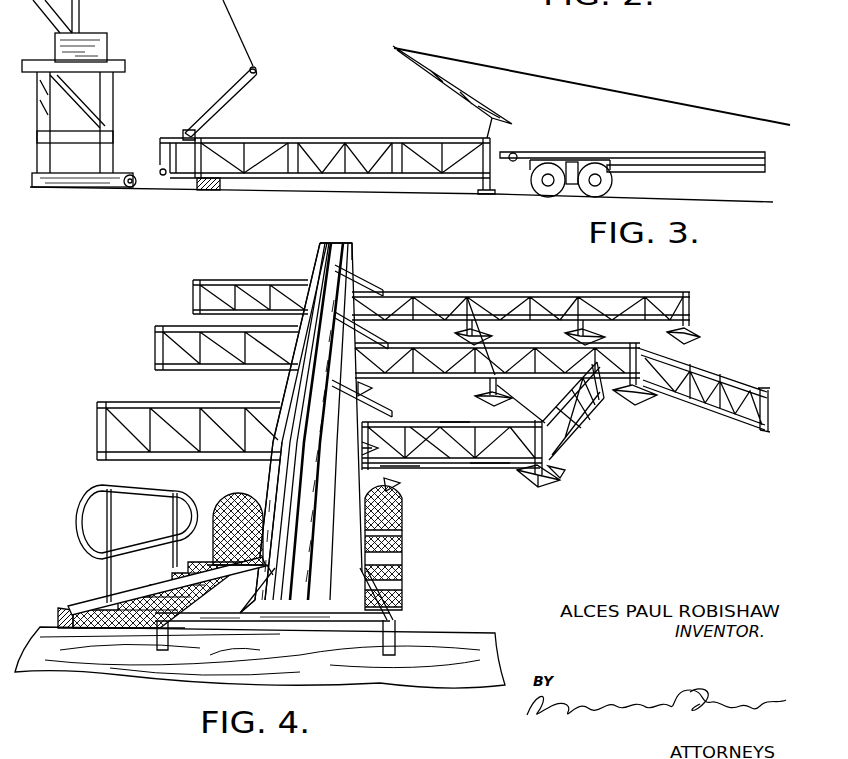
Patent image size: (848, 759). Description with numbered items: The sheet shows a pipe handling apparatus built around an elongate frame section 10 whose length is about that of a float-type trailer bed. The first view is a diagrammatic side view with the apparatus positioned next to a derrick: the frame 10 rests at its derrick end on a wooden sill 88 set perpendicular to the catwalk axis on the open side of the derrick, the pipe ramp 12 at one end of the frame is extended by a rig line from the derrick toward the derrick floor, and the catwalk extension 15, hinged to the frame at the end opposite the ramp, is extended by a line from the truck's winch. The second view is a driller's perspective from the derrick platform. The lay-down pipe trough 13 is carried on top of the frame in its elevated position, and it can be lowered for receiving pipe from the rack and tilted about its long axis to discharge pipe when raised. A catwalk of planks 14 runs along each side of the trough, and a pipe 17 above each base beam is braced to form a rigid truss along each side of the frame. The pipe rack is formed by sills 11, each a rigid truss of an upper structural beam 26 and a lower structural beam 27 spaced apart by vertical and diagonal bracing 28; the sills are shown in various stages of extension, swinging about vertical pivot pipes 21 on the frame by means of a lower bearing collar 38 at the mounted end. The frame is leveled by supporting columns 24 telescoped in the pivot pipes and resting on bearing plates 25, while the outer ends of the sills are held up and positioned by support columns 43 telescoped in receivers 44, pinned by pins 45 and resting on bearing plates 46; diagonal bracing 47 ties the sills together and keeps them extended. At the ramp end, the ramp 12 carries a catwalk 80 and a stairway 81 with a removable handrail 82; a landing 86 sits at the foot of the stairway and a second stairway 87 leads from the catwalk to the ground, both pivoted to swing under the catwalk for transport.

In FIG. 3, the elongate frame section 10 is at (333, 136).
In FIG. 4, the elongate frame section 10 is at (283, 385).
In FIG. 4, the sills 11 is at (247, 280).
In FIG. 3, the pipe ramp 12 is at (222, 86).
In FIG. 4, the pipe ramp 12 is at (88, 596).
In FIG. 4, the lay-down pipe trough 13 is at (303, 456).
In FIG. 4, the catwalk planks 14 is at (314, 421).
In FIG. 3, the catwalk extension 15 is at (433, 95).
In FIG. 4, the catwalk extension 15 is at (352, 250).
In FIG. 4, the pipe 17 is at (283, 488).
In FIG. 4, the pivot pipes 21 is at (380, 449).
In FIG. 4, the supporting columns 24 is at (402, 467).
In FIG. 4, the bearing plates 25 is at (373, 389).
In FIG. 4, the upper structural beam 26 is at (468, 424).
In FIG. 4, the lower structural beam 27 is at (488, 466).
In FIG. 4, the vertical and diagonal bracing 28 is at (430, 443).
In FIG. 4, the lower bearing collar 38 is at (380, 468).
In FIG. 4, the support columns 43 is at (539, 488).
In FIG. 4, the receivers 44 is at (691, 312).
In FIG. 4, the pins 45 is at (492, 374).
In FIG. 4, the bearing plates 46 is at (562, 471).
In FIG. 4, the diagonal bracing 47 is at (490, 335).
In FIG. 4, the catwalk 80 is at (275, 621).
In FIG. 4, the stairway 81 is at (113, 630).
In FIG. 4, the removable handrail 82 is at (82, 512).
In FIG. 4, the landing 86 is at (231, 510).
In FIG. 4, the second stairway 87 is at (396, 519).
In FIG. 3, the wooden sill 88 is at (205, 191).